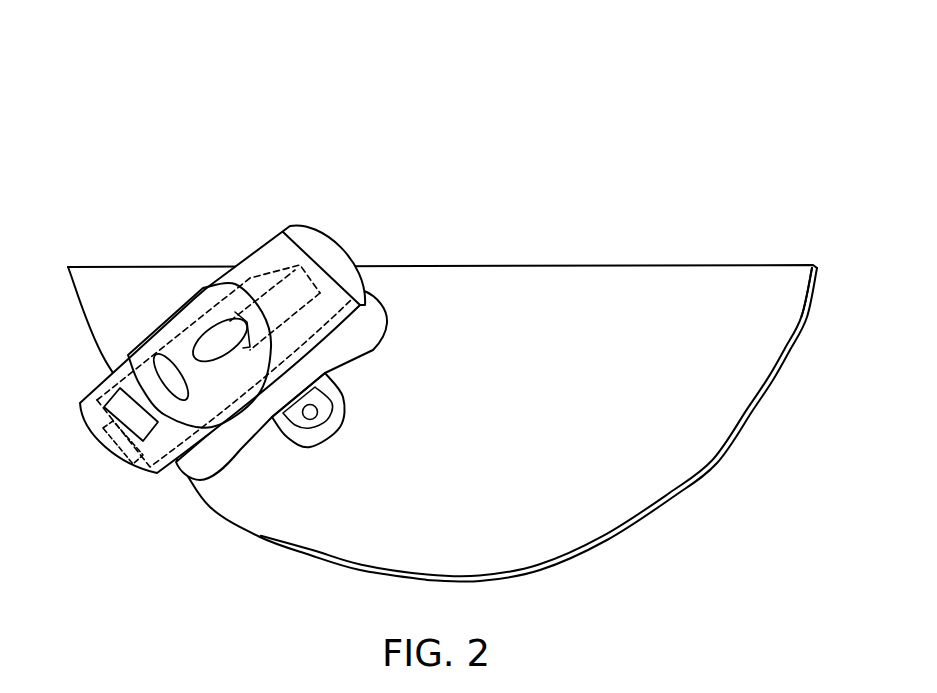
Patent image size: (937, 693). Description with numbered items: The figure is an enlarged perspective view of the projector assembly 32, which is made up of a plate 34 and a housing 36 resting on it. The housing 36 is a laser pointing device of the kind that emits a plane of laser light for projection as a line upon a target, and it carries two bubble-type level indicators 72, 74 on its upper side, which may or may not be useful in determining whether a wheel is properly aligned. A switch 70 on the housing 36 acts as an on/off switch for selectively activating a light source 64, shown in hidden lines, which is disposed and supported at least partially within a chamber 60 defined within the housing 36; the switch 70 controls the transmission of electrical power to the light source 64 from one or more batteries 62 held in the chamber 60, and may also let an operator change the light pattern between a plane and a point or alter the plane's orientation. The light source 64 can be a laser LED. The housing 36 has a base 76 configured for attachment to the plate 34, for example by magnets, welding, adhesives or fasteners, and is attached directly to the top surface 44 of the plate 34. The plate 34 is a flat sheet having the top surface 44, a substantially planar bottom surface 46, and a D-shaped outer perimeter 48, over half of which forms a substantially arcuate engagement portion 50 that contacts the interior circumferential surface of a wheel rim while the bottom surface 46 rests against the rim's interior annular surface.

The projector assembly 32 is at (513, 175).
The plate 34 is at (692, 295).
The housing 36 is at (323, 213).
The top surface 44 is at (780, 275).
The bottom surface 46 is at (780, 318).
The outer perimeter 48 is at (783, 380).
The engagement portion 50 is at (740, 433).
The chamber 60 is at (276, 302).
The battery 62 is at (248, 274).
The light source 64 is at (105, 432).
The switch 70 is at (120, 406).
The bubble-type level indicator 72 is at (212, 336).
The bubble-type level indicator 74 is at (160, 362).
The base 76 is at (243, 440).